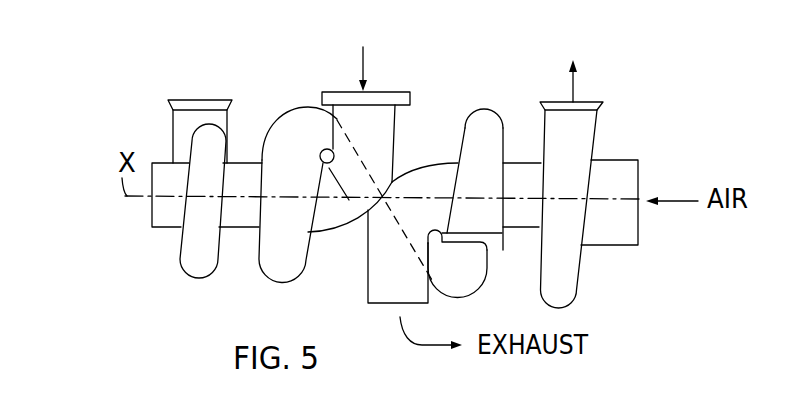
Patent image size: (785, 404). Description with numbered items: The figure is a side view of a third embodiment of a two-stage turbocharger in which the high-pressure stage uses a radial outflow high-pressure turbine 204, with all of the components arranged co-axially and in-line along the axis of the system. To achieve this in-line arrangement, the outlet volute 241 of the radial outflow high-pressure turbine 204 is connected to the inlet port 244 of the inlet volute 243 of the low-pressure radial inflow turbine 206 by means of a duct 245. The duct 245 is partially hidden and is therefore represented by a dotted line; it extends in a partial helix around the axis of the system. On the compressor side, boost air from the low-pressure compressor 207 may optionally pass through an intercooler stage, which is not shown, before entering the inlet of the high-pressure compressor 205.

The radial outflow high-pressure turbine 204 is at (272, 120).
The high-pressure compressor 205 is at (200, 256).
The low-pressure radial inflow turbine 206 is at (510, 111).
The low-pressure compressor 207 is at (583, 262).
The outlet volute 241 is at (309, 103).
The inlet volute 243 is at (473, 130).
The inlet port 244 is at (480, 277).
The duct 245 is at (353, 237).